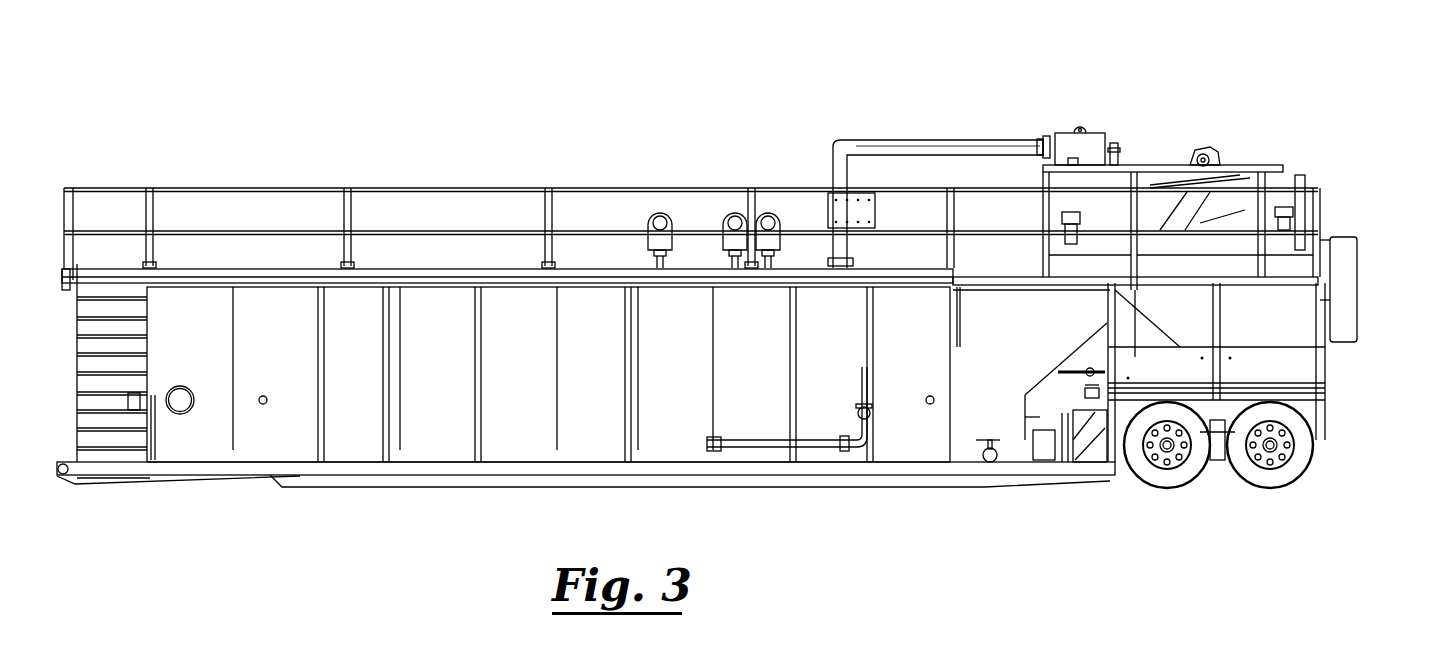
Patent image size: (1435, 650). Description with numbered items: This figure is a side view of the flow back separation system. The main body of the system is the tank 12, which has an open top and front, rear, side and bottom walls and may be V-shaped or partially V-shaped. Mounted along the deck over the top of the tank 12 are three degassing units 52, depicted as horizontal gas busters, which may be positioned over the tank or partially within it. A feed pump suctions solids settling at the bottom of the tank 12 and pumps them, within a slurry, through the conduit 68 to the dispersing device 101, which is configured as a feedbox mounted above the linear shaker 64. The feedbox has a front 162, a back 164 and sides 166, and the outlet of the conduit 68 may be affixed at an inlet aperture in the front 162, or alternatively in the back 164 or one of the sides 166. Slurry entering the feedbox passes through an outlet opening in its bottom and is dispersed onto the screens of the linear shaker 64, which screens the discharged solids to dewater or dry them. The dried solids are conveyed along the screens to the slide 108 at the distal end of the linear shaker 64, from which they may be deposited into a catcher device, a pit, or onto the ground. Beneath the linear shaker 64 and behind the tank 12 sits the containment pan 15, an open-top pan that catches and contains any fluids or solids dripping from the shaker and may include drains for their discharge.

The tank 12 is at (531, 374).
The containment pan 15 is at (1295, 362).
The degassing unit 52 is at (660, 212).
The linear shaker 64 is at (1239, 155).
The conduit 68 is at (915, 145).
The dispersing device 101 is at (1092, 137).
The slide 108 is at (1348, 267).
The front 162 is at (1068, 140).
The back 164 is at (1112, 142).
The side 166 is at (1078, 147).